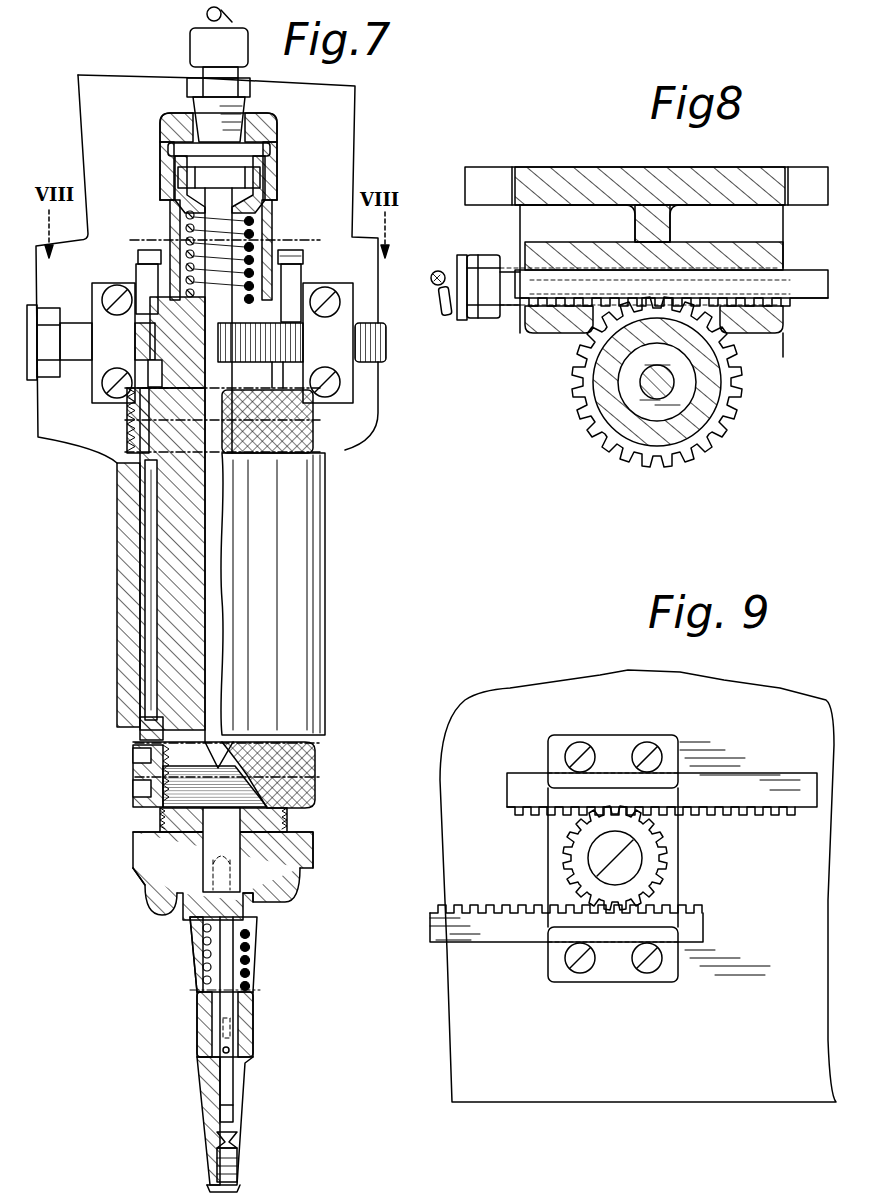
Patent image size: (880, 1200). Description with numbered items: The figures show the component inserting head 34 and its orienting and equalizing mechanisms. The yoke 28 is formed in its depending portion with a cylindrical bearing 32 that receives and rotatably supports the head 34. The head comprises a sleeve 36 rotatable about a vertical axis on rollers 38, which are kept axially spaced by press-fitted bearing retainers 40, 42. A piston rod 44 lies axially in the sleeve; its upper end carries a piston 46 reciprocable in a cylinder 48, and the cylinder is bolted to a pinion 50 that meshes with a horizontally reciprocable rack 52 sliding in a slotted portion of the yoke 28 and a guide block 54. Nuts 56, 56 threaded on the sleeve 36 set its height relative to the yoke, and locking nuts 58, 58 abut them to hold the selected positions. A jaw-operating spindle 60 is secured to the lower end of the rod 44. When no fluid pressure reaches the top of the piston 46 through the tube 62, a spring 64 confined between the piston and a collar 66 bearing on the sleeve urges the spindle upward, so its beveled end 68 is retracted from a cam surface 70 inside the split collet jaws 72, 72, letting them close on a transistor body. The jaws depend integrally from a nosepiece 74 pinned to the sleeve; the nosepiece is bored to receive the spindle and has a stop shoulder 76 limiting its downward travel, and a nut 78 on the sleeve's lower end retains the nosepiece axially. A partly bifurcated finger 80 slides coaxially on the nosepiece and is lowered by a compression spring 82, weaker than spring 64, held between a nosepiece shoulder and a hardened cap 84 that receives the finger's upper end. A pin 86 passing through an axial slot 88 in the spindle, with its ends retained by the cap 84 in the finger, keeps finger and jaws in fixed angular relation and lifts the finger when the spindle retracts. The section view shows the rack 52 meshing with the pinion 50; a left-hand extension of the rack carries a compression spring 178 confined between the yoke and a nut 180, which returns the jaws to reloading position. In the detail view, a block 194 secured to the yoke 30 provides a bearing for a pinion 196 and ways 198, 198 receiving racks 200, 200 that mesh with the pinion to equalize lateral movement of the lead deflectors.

In FIG. 7, the yoke 28 is at (353, 105).
In FIG. 8, the yoke 28 is at (770, 167).
In FIG. 9, the yoke 30 is at (754, 698).
In FIG. 7, the cylindrical bearing 32 is at (325, 523).
In FIG. 7, the component inserting head 34 is at (347, 603).
In FIG. 7, the sleeve 36 is at (168, 517).
In FIG. 8, the sleeve 36 is at (673, 418).
In FIG. 7, the rollers 38 is at (157, 668).
In FIG. 7, the bearing retainer 40 is at (143, 467).
In FIG. 7, the bearing retainer 42 is at (147, 733).
In FIG. 7, the piston rod 44 is at (217, 277).
In FIG. 8, the piston rod 44 is at (650, 378).
In FIG. 7, the piston 46 is at (270, 173).
In FIG. 7, the cylinder 48 is at (277, 135).
In FIG. 7, the pinion 50 is at (305, 338).
In FIG. 8, the pinion 50 is at (737, 397).
In FIG. 7, the rack 52 is at (380, 375).
In FIG. 8, the rack 52 is at (787, 333).
In FIG. 7, the guide block 54 is at (377, 407).
In FIG. 8, the guide block 54 is at (763, 320).
In FIG. 7, the nuts 56 is at (325, 452).
In FIG. 7, the locking nuts 58 is at (313, 407).
In FIG. 7, the jaw-operating spindle 60 is at (227, 928).
In FIG. 7, the tube 62 is at (207, 13).
In FIG. 7, the spring 64 is at (248, 235).
In FIG. 7, the collar 66 is at (277, 297).
In FIG. 7, the beveled end 68 is at (236, 1113).
In FIG. 7, the cam surface 70 is at (237, 1145).
In FIG. 7, the split collet jaws 72 is at (239, 1167).
In FIG. 7, the nosepiece 74 is at (193, 903).
In FIG. 7, the stop shoulder 76 is at (278, 890).
In FIG. 7, the nut 78 is at (313, 843).
In FIG. 7, the finger 80 is at (203, 1065).
In FIG. 7, the compression spring 82 is at (252, 952).
In FIG. 7, the hardened cap 84 is at (253, 1020).
In FIG. 7, the pin 86 is at (232, 1028).
In FIG. 7, the axial slot 88 is at (232, 1052).
In FIG. 8, the compression spring 178 is at (443, 318).
In FIG. 7, the nut 180 is at (53, 377).
In FIG. 8, the nut 180 is at (480, 255).
In FIG. 9, the block 194 is at (548, 855).
In FIG. 9, the pinion 196 is at (660, 850).
In FIG. 9, the ways 198 is at (663, 775).
In FIG. 9, the racks 200 is at (793, 780).